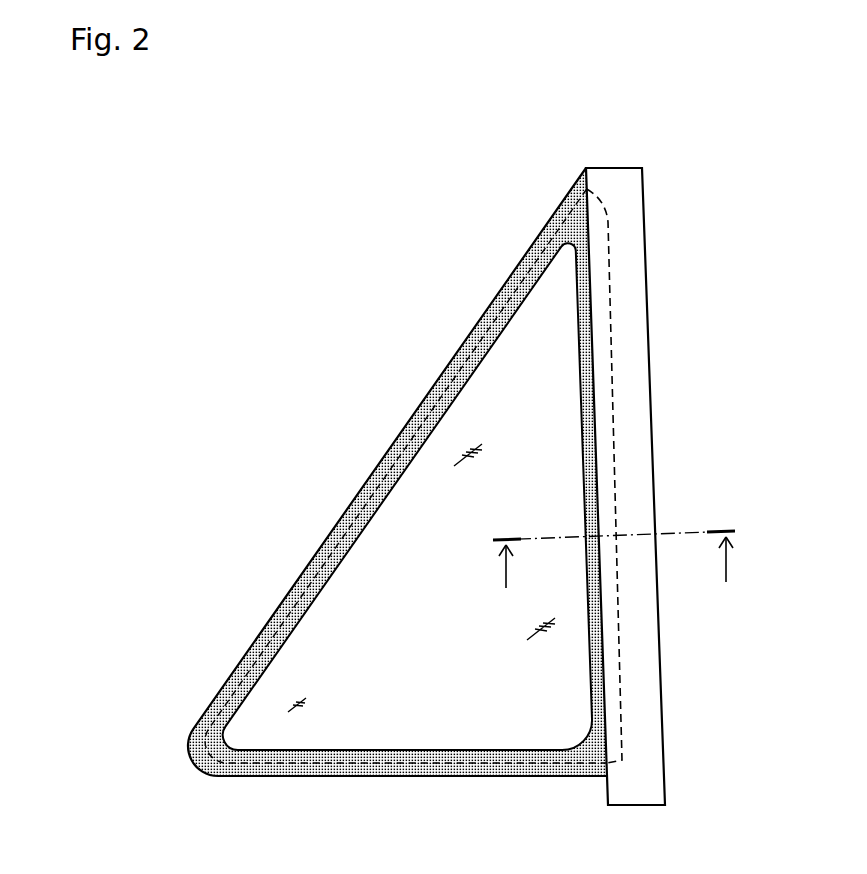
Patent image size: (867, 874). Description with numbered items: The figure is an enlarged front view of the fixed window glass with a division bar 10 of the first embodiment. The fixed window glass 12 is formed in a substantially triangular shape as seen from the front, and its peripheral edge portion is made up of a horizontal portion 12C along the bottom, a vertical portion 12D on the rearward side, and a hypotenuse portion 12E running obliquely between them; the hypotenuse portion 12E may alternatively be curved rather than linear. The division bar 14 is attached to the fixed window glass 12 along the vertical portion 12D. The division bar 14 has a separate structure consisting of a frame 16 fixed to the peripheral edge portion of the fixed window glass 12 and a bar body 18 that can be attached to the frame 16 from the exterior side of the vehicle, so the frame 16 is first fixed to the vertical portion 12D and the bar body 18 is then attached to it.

The fixed window glass with a division bar 10 is at (650, 147).
The fixed window glass 12 is at (452, 596).
The horizontal portion 12C is at (404, 778).
The vertical portion 12D is at (616, 476).
The hypotenuse portion 12E is at (359, 492).
The division bar 14 is at (660, 290).
The frame 16 is at (500, 276).
The bar body 18 is at (627, 401).